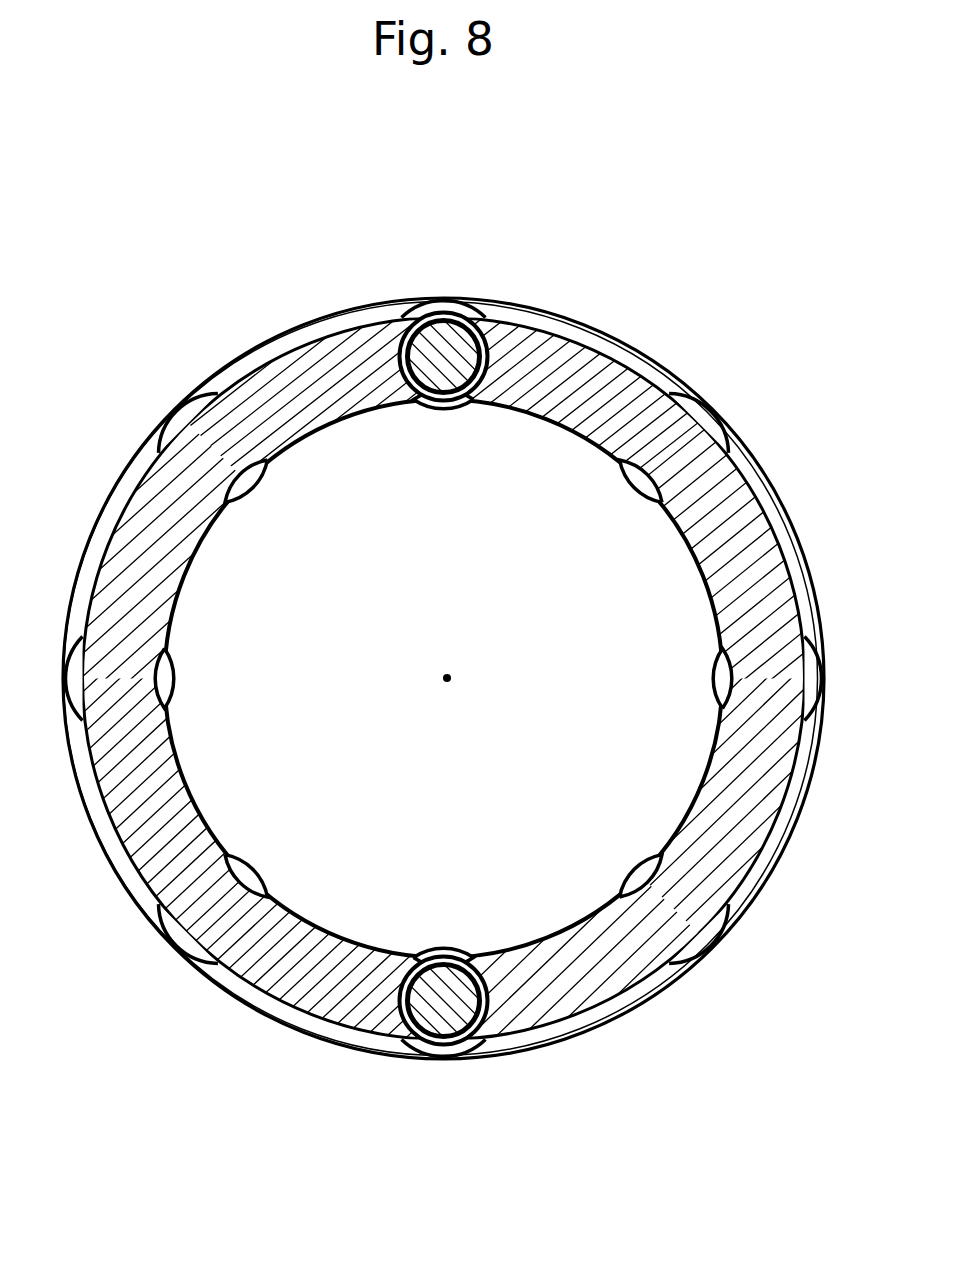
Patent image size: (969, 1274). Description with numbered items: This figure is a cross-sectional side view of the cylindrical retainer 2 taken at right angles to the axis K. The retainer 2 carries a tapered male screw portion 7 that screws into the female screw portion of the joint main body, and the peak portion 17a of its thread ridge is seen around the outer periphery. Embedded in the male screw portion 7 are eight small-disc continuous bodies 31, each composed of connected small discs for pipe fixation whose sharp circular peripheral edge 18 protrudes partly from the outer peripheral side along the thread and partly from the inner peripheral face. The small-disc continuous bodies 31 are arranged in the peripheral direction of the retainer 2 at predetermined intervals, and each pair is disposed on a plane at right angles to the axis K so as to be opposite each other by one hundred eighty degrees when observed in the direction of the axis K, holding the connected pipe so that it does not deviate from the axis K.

The retainer 2 is at (432, 234).
The male screw portion 7 is at (287, 328).
The peak portion 17a is at (517, 303).
The circular peripheral edge 18 is at (463, 412).
The small-disc continuous body 31 is at (428, 411).
The axis K is at (449, 680).